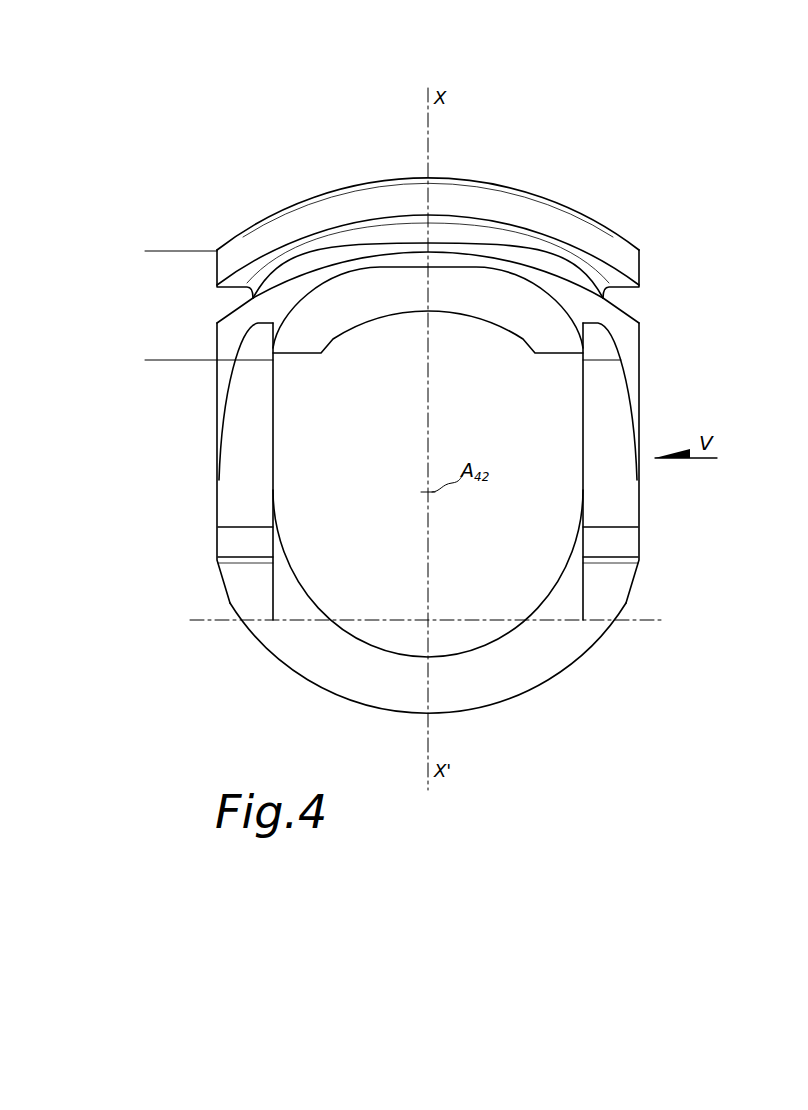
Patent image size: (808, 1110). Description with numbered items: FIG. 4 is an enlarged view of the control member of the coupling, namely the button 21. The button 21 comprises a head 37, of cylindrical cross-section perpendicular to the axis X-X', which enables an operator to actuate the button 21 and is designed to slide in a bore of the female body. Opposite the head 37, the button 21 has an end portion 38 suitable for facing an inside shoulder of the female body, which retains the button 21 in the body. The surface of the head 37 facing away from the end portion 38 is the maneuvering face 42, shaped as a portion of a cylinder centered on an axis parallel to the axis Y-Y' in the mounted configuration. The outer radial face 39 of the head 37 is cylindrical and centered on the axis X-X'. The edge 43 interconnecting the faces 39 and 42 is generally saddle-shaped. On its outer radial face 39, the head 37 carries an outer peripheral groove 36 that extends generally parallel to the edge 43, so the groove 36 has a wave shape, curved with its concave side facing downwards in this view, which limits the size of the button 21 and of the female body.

The button 21 is at (500, 163).
The outer peripheral groove 36 is at (573, 268).
The head 37 is at (150, 251).
The end portion 38 is at (469, 683).
The outer radial face 39 is at (313, 218).
The maneuvering face 42 is at (549, 195).
The edge 43 is at (635, 243).